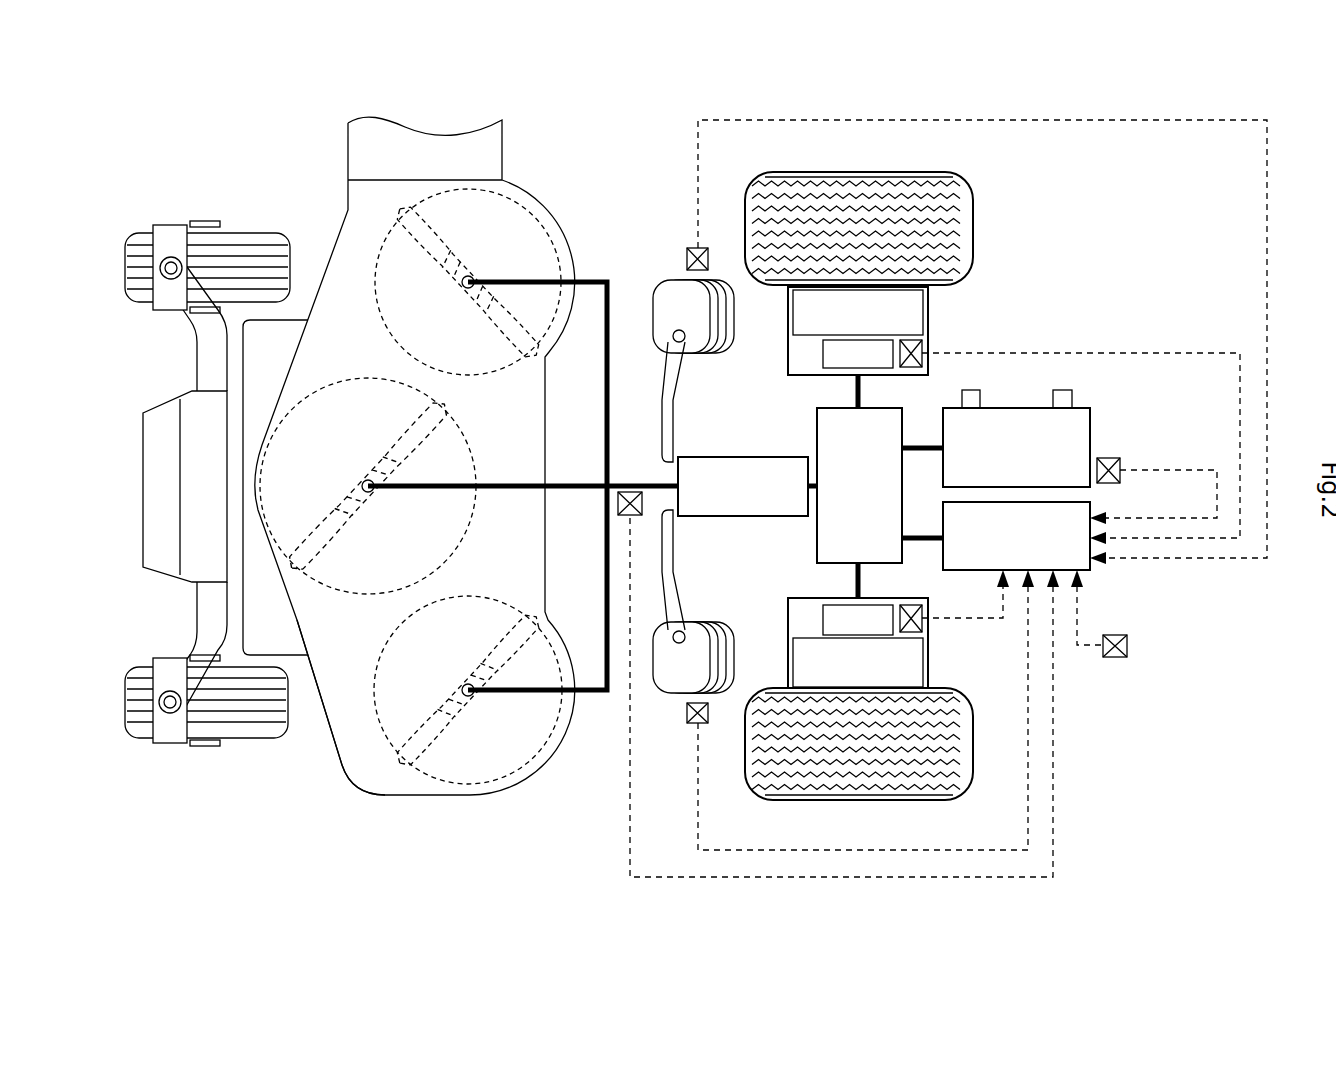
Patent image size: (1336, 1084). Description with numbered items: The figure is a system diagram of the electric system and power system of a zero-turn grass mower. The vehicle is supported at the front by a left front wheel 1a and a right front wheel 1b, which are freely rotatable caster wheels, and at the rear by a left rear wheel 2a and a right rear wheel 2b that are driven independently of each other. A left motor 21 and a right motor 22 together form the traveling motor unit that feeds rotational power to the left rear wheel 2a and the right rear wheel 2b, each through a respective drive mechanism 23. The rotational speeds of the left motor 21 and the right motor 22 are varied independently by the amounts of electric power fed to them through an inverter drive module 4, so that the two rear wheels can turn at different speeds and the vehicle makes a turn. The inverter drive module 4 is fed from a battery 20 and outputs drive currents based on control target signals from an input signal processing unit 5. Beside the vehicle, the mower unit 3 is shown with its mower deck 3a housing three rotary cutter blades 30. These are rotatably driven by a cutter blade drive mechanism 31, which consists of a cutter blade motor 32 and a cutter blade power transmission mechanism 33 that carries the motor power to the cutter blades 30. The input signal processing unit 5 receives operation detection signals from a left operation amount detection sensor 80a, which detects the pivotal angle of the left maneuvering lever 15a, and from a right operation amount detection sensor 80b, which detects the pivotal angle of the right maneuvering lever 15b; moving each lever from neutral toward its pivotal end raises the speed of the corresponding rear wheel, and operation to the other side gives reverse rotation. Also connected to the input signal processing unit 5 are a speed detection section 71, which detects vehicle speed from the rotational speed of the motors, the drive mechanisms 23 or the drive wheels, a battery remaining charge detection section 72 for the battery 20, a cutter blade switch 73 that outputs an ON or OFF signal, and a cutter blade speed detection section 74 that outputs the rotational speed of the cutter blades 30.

The left front wheel 1a is at (145, 733).
The right front wheel 1b is at (127, 250).
The left rear wheel 2a is at (805, 802).
The right rear wheel 2b is at (975, 216).
The mower unit 3 is at (300, 226).
The mower deck 3a is at (333, 732).
The inverter drive module 4 is at (817, 455).
The input signal processing unit 5 is at (1088, 573).
The left maneuvering lever 15a is at (676, 545).
The right maneuvering lever 15b is at (676, 428).
The battery 20 is at (1090, 431).
The left motor 21 is at (823, 620).
The right motor 22 is at (823, 353).
The drive mechanism 23 is at (788, 300).
The cutter blade 30 is at (408, 406).
The cutter blade drive mechanism 31 is at (585, 480).
The cutter blade motor 32 is at (725, 516).
The cutter blade power transmission mechanism 33 is at (578, 493).
The speed detection section 71 is at (922, 348).
The battery remaining charge detection section 72 is at (1108, 458).
The cutter blade switch 73 is at (1127, 645).
The cutter blade speed detection section 74 is at (630, 491).
The left operation amount detection sensor 80a is at (686, 712).
The right operation amount detection sensor 80b is at (686, 262).